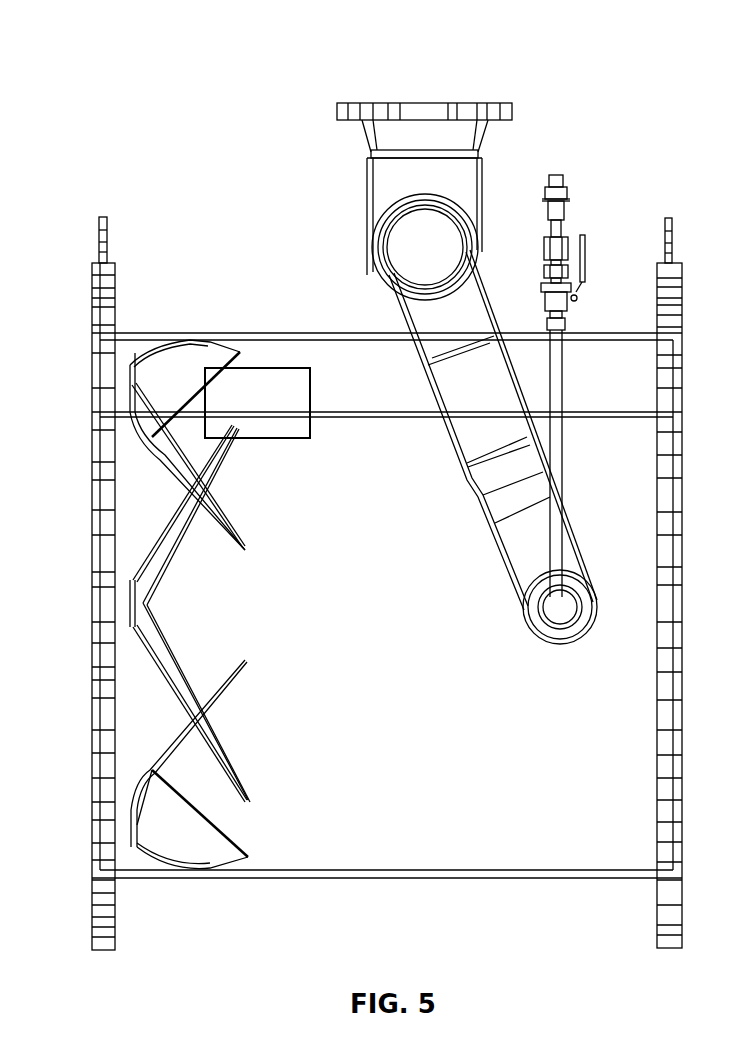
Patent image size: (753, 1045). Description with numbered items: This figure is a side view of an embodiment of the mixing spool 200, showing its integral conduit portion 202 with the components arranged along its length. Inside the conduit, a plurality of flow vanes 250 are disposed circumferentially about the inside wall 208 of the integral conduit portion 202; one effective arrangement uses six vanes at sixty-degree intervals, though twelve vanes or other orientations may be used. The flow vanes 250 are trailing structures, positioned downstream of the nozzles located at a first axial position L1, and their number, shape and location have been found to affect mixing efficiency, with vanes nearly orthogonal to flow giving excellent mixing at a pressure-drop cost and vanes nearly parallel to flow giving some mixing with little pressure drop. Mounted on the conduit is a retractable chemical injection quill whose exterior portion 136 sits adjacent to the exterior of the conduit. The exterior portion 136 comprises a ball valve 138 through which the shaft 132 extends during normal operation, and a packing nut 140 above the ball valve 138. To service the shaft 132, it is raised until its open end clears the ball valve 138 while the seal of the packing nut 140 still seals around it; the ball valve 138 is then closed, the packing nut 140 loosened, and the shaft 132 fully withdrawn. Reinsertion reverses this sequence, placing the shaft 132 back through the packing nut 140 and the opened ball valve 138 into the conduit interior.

The mixing spool 200 is at (108, 52).
The integral conduit portion 202 is at (427, 884).
The inside wall 208 is at (486, 447).
The flow vanes 250 is at (224, 503).
The exterior portion 136 is at (525, 260).
The shaft 132 is at (573, 233).
The packing nut 140 is at (570, 245).
The ball valve 138 is at (588, 293).
The first axial position L1 is at (572, 870).